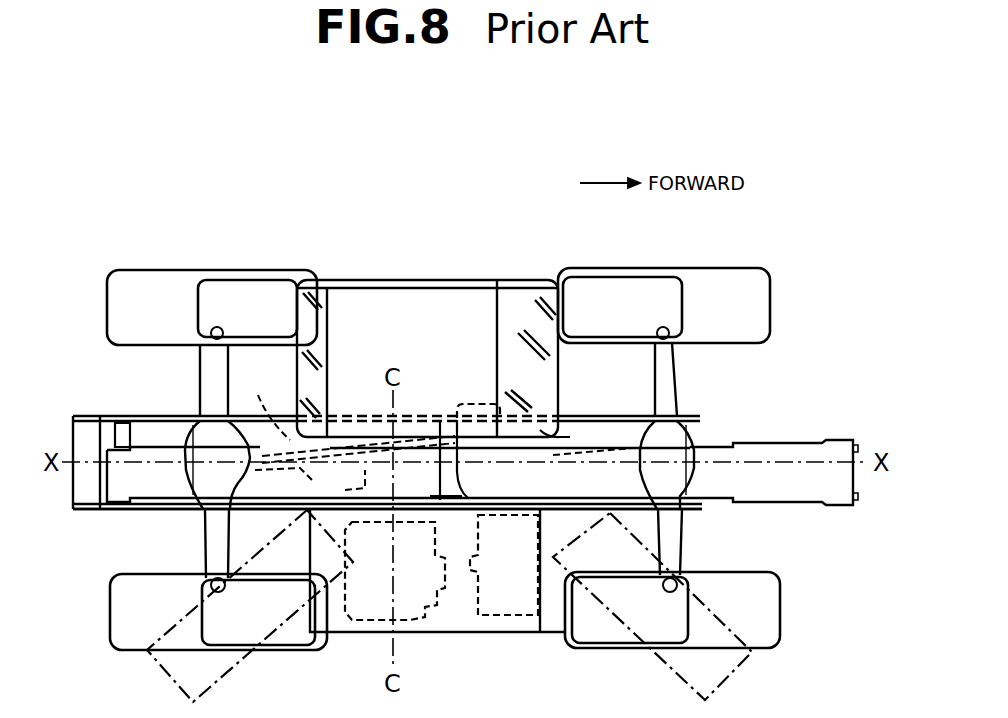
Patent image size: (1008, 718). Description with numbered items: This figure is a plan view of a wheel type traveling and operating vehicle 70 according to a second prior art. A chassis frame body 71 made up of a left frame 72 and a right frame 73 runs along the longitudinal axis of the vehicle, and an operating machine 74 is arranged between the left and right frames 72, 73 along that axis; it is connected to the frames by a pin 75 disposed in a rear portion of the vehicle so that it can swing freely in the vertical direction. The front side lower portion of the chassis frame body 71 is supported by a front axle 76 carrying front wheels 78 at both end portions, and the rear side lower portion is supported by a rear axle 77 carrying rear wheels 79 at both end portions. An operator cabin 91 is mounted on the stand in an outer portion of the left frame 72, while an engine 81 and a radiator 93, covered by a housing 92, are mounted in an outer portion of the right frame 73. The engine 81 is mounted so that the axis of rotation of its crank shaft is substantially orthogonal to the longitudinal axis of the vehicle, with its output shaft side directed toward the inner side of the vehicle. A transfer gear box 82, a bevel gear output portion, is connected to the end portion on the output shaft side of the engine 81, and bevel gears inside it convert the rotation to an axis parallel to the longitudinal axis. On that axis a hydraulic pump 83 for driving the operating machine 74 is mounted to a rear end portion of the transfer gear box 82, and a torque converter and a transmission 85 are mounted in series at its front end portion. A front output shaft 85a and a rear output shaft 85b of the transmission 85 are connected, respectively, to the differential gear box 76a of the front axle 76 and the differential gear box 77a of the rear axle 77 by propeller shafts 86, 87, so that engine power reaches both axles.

The wheel type traveling and operating vehicle 70 is at (516, 270).
The chassis frame body 71 is at (71, 438).
The left frame 72 is at (86, 416).
The right frame 73 is at (93, 511).
The operating machine 74 is at (798, 443).
The pin 75 is at (121, 430).
The front axle 76 is at (682, 375).
The differential gear box 76a is at (697, 432).
The rear axle 77 is at (202, 376).
The differential gear box 77a is at (200, 456).
The front wheel 78 is at (760, 268).
The rear wheel 79 is at (170, 270).
The engine 81 is at (378, 632).
The transfer gear box 82 is at (345, 490).
The hydraulic pump 83 is at (365, 440).
The transmission 85 is at (475, 405).
The front output shaft 85a is at (560, 456).
The rear output shaft 85b is at (445, 441).
The propeller shaft 86 is at (603, 450).
The propeller shaft 87 is at (263, 403).
The operator cabin 91 is at (398, 284).
The housing 92 is at (533, 632).
The radiator 93 is at (498, 632).